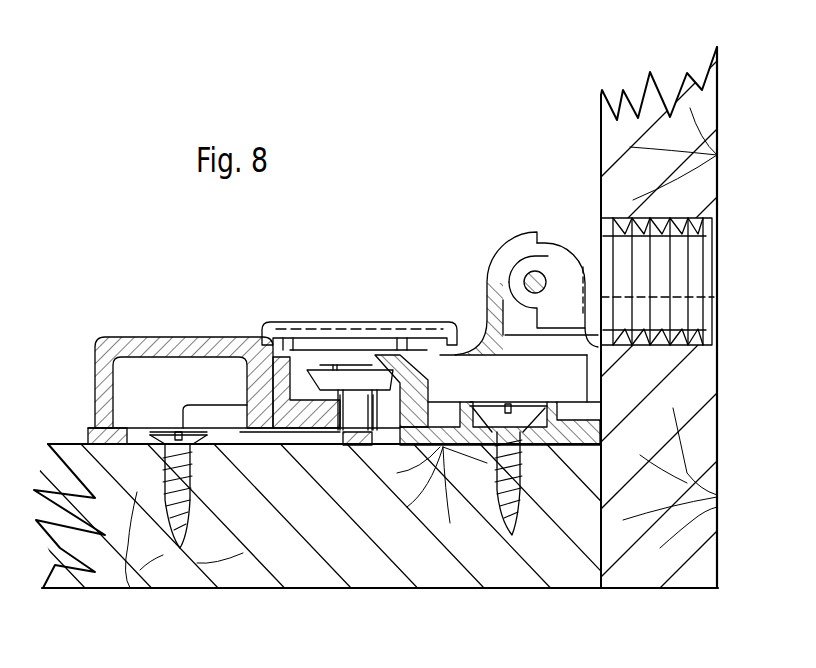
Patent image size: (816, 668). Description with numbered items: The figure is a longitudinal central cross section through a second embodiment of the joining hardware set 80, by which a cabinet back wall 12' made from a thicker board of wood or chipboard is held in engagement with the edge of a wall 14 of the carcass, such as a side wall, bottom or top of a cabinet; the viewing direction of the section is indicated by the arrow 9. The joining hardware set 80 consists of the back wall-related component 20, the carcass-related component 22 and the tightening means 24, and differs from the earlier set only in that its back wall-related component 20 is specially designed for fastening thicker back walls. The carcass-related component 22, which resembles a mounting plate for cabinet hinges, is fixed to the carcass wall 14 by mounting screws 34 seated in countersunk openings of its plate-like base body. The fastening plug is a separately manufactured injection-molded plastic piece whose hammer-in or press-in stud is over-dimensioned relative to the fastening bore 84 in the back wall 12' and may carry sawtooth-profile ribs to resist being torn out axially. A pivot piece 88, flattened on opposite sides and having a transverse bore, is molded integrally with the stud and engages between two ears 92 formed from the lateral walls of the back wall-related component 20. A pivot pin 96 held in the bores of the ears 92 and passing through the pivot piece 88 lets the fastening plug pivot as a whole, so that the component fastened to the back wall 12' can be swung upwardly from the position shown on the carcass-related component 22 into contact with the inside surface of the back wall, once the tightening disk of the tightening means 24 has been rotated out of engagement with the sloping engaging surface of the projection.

The section line 9 is at (353, 196).
The back wall 12' is at (659, 347).
The wall 14 is at (380, 590).
The back wall-related component 20 is at (150, 336).
The carcass-related component 22 is at (468, 388).
The tightening means 24 is at (302, 328).
The mounting screws 34 is at (180, 550).
The joining hardware set 80 is at (226, 312).
The fastening bore 84 is at (716, 232).
The pivot piece 88 is at (553, 250).
The ears 92 is at (507, 255).
The pivot pin 96 is at (535, 270).